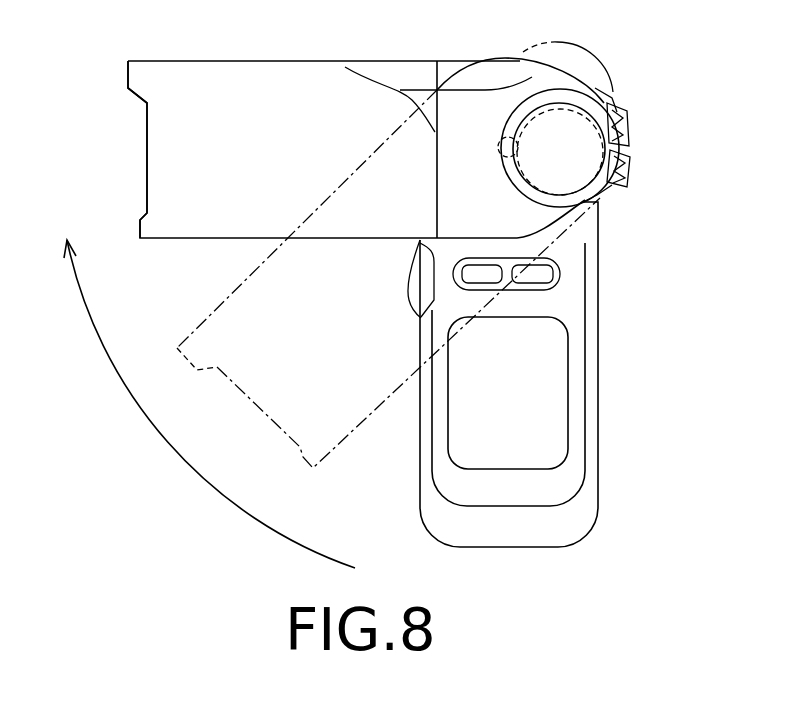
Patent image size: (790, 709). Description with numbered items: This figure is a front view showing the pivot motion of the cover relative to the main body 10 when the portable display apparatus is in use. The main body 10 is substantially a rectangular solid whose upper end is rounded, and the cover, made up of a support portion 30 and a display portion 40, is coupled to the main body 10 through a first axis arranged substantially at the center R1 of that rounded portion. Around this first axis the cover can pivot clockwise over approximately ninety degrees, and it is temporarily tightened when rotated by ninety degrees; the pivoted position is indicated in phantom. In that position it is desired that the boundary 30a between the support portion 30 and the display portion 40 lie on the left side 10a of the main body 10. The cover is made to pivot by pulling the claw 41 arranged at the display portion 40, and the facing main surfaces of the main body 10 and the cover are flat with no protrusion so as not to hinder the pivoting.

The main body 10 is at (557, 308).
The left side of the main body 10a is at (420, 489).
The support portion 30 is at (533, 72).
The boundary 30a is at (399, 86).
The display portion 40 is at (237, 78).
The claw 41 is at (137, 77).
The center of the rounded portion R1 is at (613, 92).